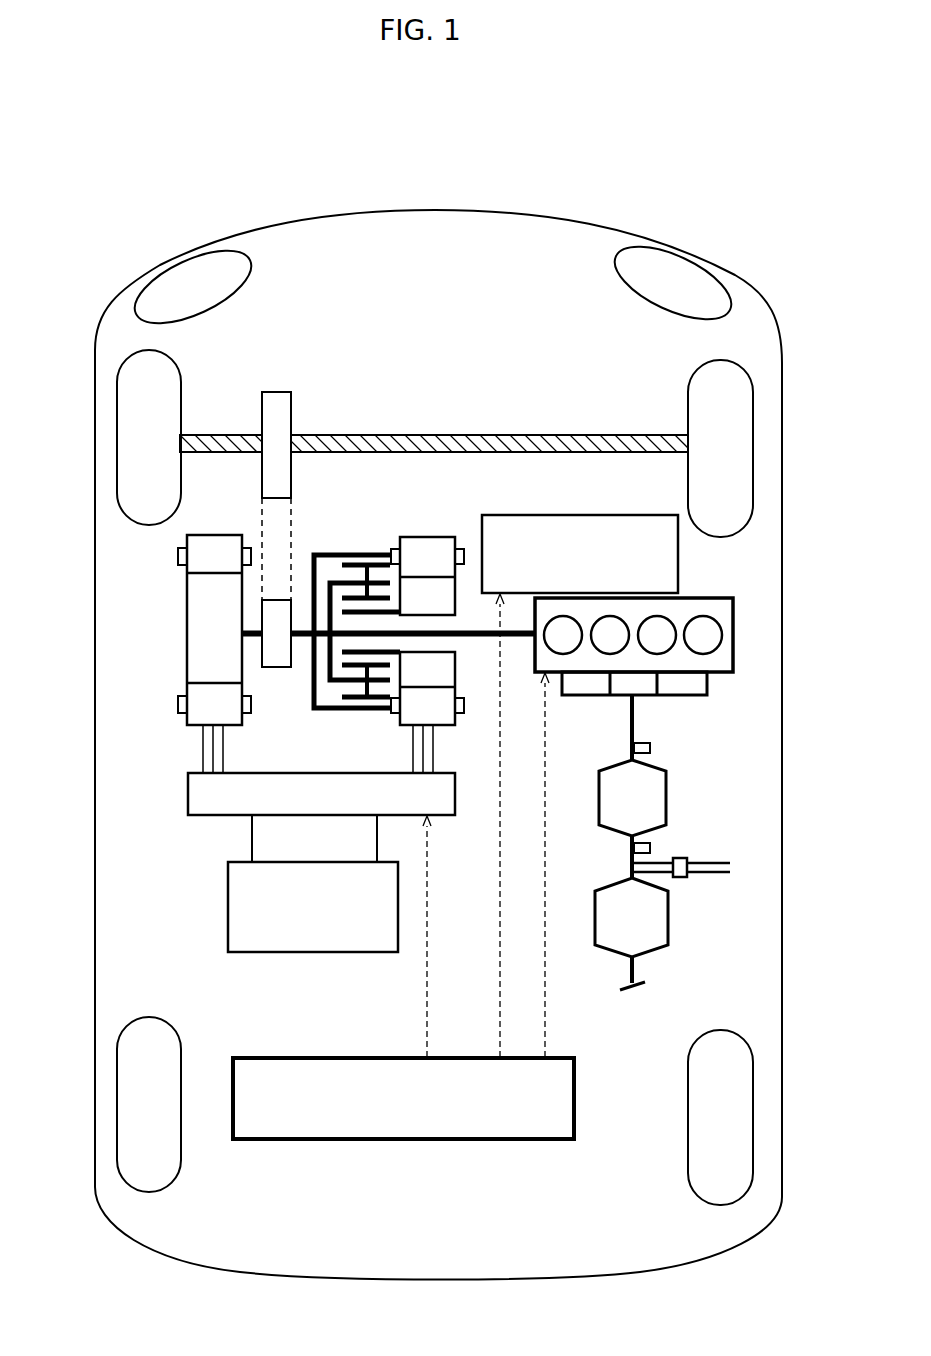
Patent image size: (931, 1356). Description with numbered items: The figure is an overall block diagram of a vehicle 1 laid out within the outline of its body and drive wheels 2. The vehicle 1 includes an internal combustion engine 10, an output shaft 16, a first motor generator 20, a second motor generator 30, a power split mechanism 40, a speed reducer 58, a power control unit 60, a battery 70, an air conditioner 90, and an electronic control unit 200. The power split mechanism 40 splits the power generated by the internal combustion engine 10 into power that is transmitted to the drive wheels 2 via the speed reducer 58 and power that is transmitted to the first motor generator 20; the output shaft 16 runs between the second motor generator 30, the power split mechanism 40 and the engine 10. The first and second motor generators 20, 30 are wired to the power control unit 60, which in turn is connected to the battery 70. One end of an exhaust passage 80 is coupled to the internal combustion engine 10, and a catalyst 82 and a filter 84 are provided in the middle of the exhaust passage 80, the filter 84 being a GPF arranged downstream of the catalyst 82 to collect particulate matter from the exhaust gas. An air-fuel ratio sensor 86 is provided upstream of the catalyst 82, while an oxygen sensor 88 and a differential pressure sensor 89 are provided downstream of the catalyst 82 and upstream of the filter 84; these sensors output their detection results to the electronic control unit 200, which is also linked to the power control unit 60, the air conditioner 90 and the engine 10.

The vehicle 1 is at (419, 163).
The drive wheels 2 is at (700, 362).
The internal combustion engine 10 is at (705, 597).
The output shaft 16 is at (300, 645).
The first motor generator 20 is at (426, 536).
The second motor generator 30 is at (215, 534).
The power split mechanism 40 is at (361, 547).
The speed reducer 58 is at (276, 391).
The power control unit 60 is at (187, 792).
The battery 70 is at (227, 906).
The exhaust passage 80 is at (580, 697).
The catalyst 82 is at (667, 798).
The filter 84 is at (669, 934).
The air-fuel ratio sensor 86 is at (651, 748).
The oxygen sensor 88 is at (651, 847).
The differential pressure sensor 89 is at (684, 879).
The air conditioner 90 is at (613, 514).
The electronic control unit 200 is at (316, 1057).